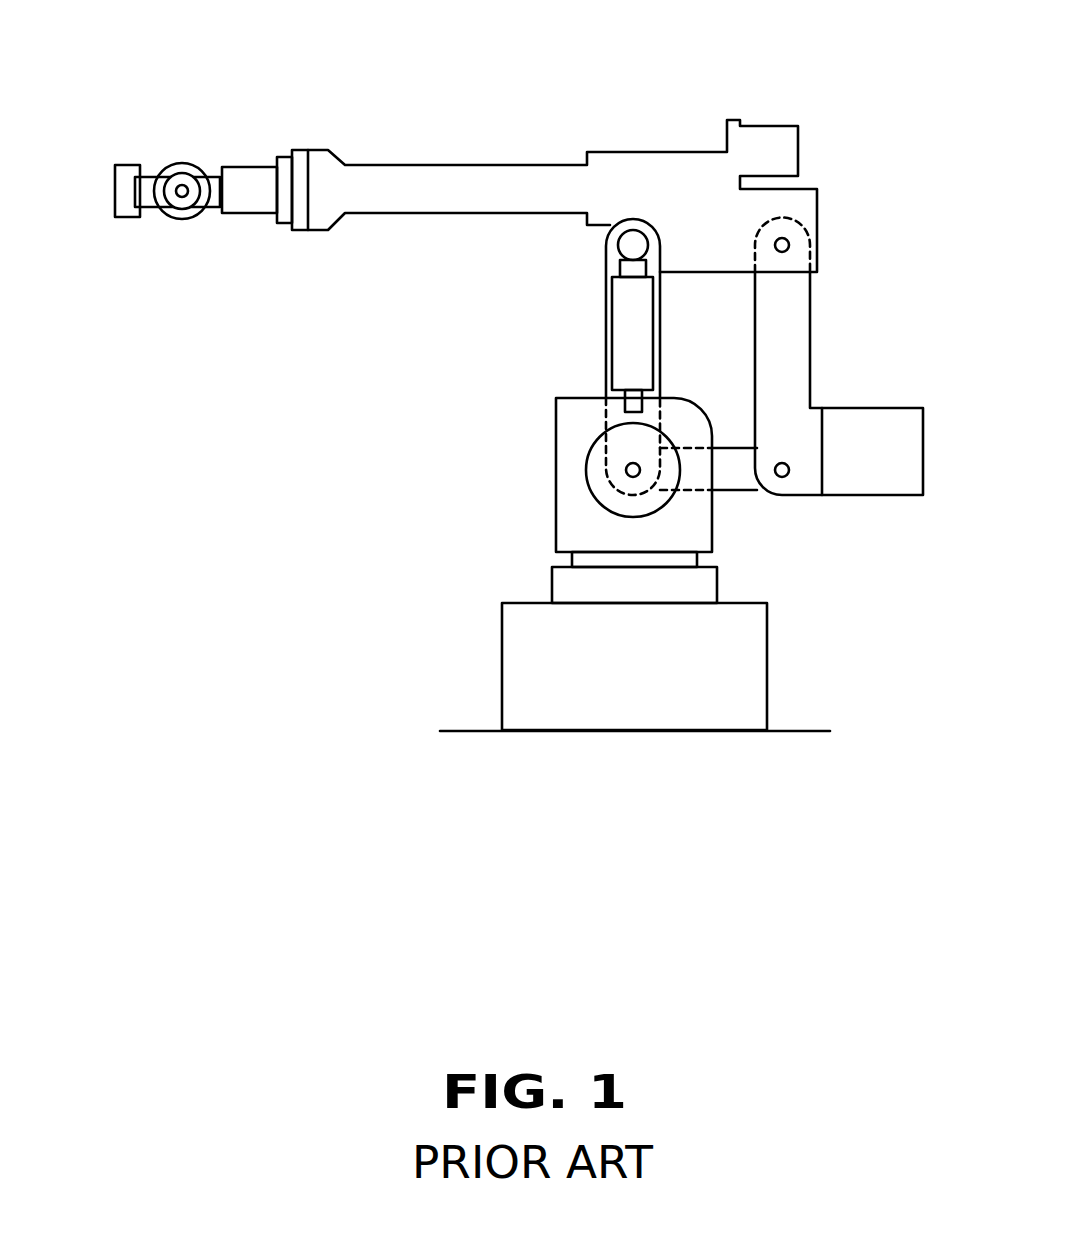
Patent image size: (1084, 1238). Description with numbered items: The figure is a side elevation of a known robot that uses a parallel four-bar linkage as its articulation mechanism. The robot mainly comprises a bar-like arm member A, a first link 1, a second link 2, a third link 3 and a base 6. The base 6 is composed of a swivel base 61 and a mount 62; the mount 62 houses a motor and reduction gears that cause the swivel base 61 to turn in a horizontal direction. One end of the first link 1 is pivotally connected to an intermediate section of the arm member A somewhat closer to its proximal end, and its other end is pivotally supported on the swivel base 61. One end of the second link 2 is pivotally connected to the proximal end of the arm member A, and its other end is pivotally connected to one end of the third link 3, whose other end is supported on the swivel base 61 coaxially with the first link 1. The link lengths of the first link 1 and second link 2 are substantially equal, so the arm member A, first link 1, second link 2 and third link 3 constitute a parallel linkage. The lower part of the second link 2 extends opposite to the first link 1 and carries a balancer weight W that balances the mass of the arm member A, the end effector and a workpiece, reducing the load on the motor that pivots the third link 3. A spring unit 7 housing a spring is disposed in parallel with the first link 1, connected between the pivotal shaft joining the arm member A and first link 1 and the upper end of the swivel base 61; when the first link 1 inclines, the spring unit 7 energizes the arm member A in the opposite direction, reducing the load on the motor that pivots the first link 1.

The arm member A is at (462, 165).
The first link 1 is at (606, 372).
The spring unit 7 is at (612, 325).
The second link 2 is at (812, 320).
The balancer weight W is at (873, 408).
The third link 3 is at (738, 493).
The base 6 is at (544, 564).
The swivel base 61 is at (556, 515).
The mount 62 is at (502, 673).